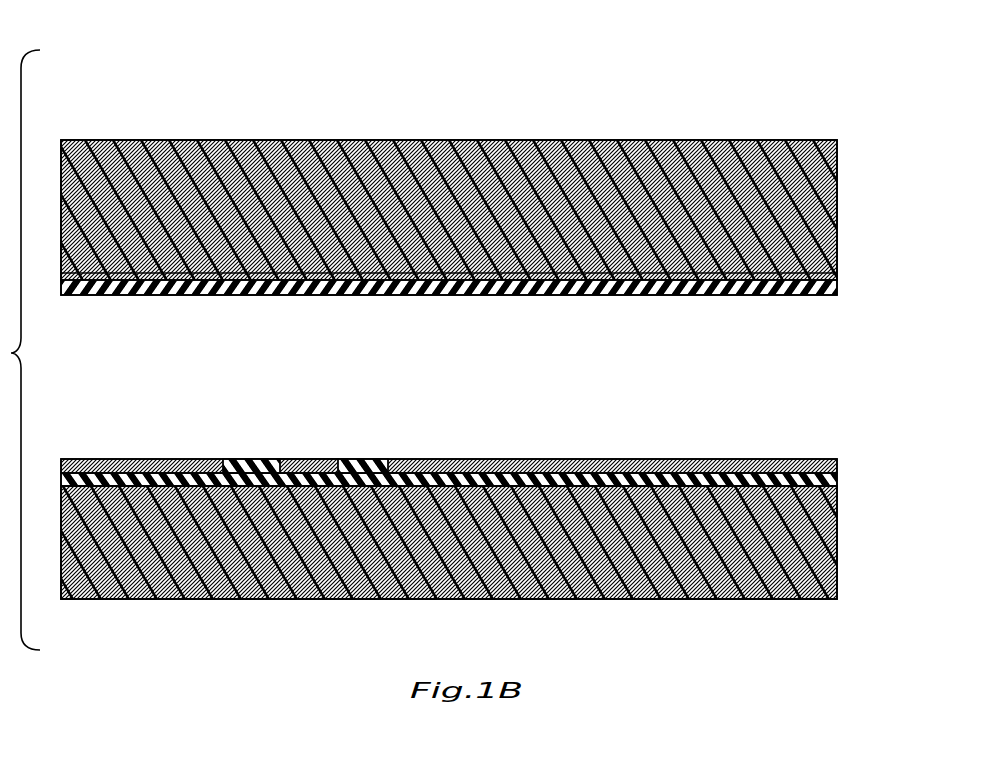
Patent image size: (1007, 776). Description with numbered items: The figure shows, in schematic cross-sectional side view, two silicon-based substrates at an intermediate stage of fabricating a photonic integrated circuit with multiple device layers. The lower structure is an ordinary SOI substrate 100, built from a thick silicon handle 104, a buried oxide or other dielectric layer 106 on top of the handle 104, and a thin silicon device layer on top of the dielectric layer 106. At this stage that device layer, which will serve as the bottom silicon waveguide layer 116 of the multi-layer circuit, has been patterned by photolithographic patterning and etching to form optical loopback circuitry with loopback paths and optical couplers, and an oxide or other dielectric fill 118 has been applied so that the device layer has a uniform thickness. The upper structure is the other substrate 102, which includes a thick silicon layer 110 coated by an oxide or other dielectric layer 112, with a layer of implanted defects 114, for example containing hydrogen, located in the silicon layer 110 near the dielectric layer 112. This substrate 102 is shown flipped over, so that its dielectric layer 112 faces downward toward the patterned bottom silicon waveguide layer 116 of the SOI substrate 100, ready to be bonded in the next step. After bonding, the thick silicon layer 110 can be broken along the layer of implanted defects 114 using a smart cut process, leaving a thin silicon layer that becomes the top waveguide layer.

The substrate 102 is at (479, 164).
The thick silicon layer 110 is at (831, 186).
The layer of implanted defects 114 is at (829, 228).
The dielectric layer 112 is at (831, 274).
The SOI substrate 100 is at (484, 484).
The dielectric fill 118 is at (358, 460).
The bottom silicon waveguide layer 116 is at (831, 458).
The dielectric layer 106 is at (829, 490).
The silicon handle 104 is at (831, 532).